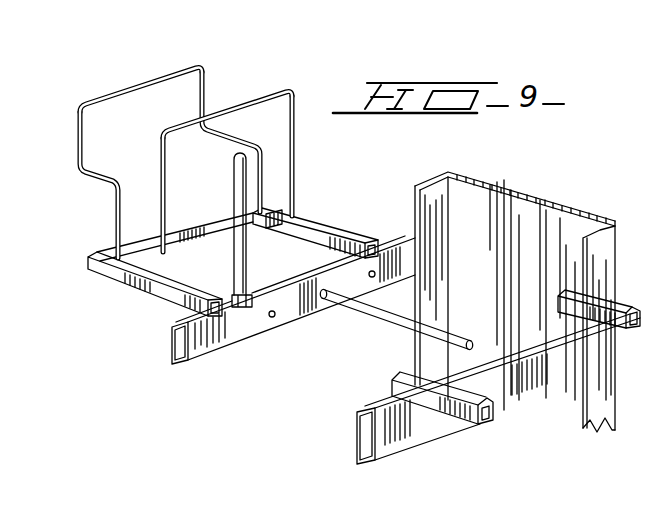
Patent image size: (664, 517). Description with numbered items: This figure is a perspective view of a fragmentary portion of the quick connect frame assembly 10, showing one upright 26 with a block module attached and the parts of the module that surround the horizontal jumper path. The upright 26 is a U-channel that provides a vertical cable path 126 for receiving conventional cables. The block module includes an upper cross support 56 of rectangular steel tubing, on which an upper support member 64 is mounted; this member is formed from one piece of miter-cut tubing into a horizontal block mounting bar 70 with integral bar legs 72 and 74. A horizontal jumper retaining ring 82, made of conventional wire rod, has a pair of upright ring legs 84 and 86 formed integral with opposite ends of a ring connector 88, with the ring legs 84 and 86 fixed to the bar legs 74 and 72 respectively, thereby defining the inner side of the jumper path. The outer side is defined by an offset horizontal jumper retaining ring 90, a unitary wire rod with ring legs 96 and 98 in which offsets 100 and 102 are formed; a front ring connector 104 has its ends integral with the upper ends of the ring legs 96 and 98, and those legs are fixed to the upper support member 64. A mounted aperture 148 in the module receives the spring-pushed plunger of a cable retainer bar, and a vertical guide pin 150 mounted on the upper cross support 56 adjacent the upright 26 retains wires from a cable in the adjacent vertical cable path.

The pallet base assembly 10 is at (307, 263).
The upright 26 is at (515, 291).
The upper cross support 56 is at (218, 352).
The upper support member 64 is at (207, 259).
The horizontal block mounting bar 70 is at (185, 229).
The bar leg 72 is at (158, 292).
The bar leg 74 is at (357, 224).
The horizontal jumper retaining ring 82 is at (237, 145).
The ring leg 84 is at (296, 159).
The ring leg 86 is at (159, 183).
The ring connector 88 is at (224, 108).
The offset horizontal jumper retaining ring 90 is at (160, 143).
The ring leg 96 is at (115, 213).
The ring leg 98 is at (255, 173).
The offset 100 is at (103, 178).
The offset 102 is at (218, 143).
The front ring connector 104 is at (141, 86).
The vertical cable path 126 is at (580, 308).
The mounted aperture 148 is at (274, 317).
The vertical guide pin 150 is at (262, 226).